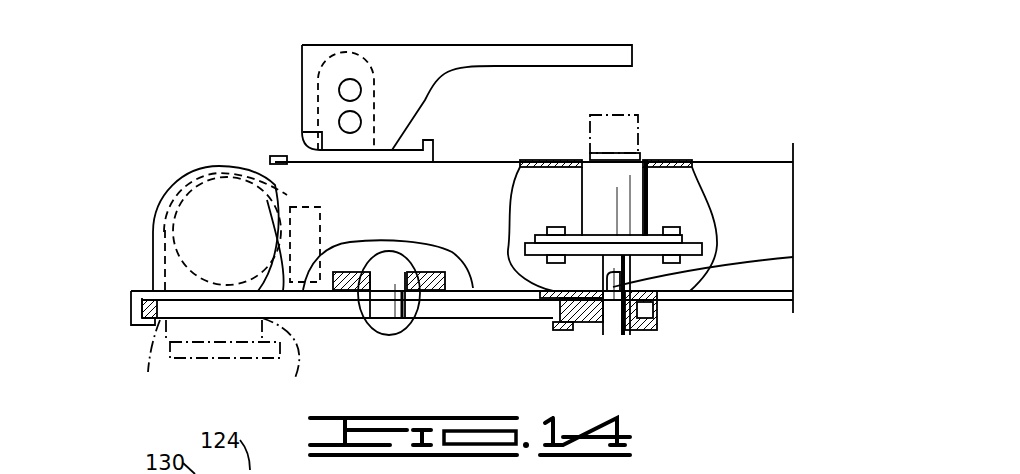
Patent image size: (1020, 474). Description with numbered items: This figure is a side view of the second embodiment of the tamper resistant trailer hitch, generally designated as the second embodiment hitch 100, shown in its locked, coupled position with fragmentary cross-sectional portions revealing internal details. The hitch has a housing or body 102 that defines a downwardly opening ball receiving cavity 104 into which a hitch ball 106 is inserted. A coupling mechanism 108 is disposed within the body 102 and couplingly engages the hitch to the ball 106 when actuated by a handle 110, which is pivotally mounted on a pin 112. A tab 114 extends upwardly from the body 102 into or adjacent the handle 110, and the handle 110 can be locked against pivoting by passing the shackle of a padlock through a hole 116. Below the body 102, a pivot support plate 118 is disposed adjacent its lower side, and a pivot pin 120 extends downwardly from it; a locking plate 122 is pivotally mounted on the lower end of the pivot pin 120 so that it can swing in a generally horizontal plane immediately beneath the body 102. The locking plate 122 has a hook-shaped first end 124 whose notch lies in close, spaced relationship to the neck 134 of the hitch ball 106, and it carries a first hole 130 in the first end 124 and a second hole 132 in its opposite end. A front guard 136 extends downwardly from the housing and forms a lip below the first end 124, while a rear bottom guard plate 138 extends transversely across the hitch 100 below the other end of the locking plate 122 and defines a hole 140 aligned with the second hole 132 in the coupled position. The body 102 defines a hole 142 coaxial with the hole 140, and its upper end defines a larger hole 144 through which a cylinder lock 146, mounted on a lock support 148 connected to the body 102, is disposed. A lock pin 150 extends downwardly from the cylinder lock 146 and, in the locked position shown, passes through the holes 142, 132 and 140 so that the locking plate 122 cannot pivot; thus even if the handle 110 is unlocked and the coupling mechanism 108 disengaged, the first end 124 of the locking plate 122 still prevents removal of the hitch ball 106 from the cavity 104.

The second embodiment hitch 100 is at (652, 54).
The body 102 is at (297, 178).
The cavity 104 is at (174, 191).
The hitch ball 106 is at (208, 178).
The coupling mechanism 108 is at (322, 225).
The handle 110 is at (465, 56).
The pin 112 is at (350, 85).
The tab 114 is at (318, 78).
The hole 116 is at (353, 118).
The pivot support plate 118 is at (411, 327).
The pivot pin 120 is at (383, 292).
The locking plate 122 is at (447, 310).
The first end 124 is at (142, 306).
The first hole 130 is at (158, 362).
The second hole 132 is at (608, 318).
The neck 134 is at (298, 374).
The front guard 136 is at (145, 325).
The rear bottom guard plate 138 is at (567, 330).
The hole 140 is at (610, 333).
The hole 142 is at (623, 287).
The larger hole 144 is at (640, 160).
The cylinder lock 146 is at (615, 155).
The lock support 148 is at (677, 242).
The lock pin 150 is at (784, 257).